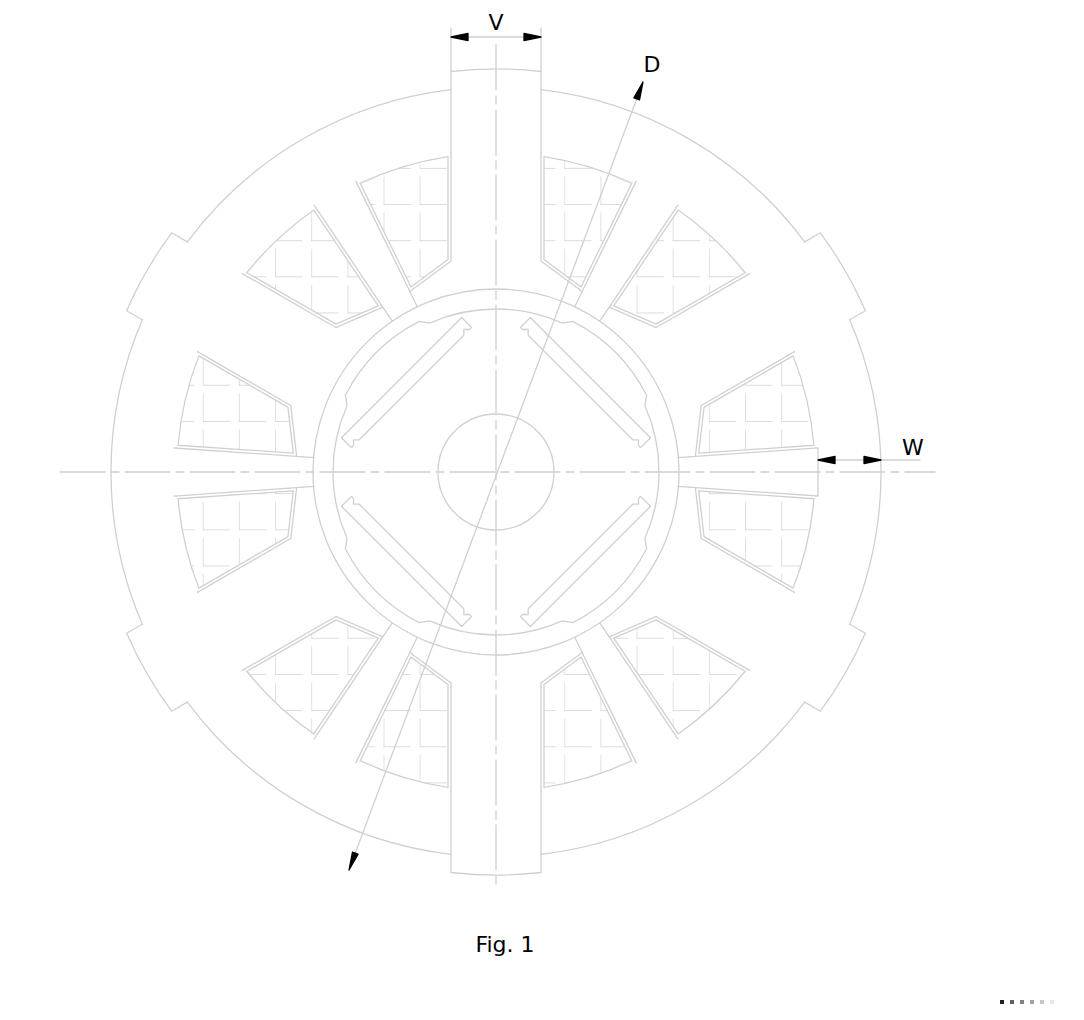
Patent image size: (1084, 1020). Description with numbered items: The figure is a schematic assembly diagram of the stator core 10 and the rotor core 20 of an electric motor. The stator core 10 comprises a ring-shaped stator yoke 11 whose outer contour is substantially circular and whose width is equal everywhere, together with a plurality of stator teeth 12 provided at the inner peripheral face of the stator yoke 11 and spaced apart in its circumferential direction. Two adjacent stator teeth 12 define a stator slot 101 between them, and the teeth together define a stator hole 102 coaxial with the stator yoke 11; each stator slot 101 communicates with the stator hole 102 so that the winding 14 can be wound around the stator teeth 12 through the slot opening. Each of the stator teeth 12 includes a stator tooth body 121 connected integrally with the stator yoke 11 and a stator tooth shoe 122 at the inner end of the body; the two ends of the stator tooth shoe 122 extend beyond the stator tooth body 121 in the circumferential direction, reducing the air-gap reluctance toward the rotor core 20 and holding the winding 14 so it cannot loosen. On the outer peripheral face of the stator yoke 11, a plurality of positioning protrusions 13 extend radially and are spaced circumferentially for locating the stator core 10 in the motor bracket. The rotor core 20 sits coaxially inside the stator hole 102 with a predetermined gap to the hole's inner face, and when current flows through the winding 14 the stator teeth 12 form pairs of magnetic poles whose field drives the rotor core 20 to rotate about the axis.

The stator core 10 is at (499, 476).
The stator yoke 11 is at (317, 147).
The stator teeth 12 is at (260, 375).
The positioning protrusion 13 is at (150, 280).
The winding 14 is at (432, 185).
The rotor core 20 is at (727, 337).
The stator slot 101 is at (777, 460).
The stator hole 102 is at (320, 705).
The stator tooth body 121 is at (582, 648).
The stator tooth shoe 122 is at (522, 758).